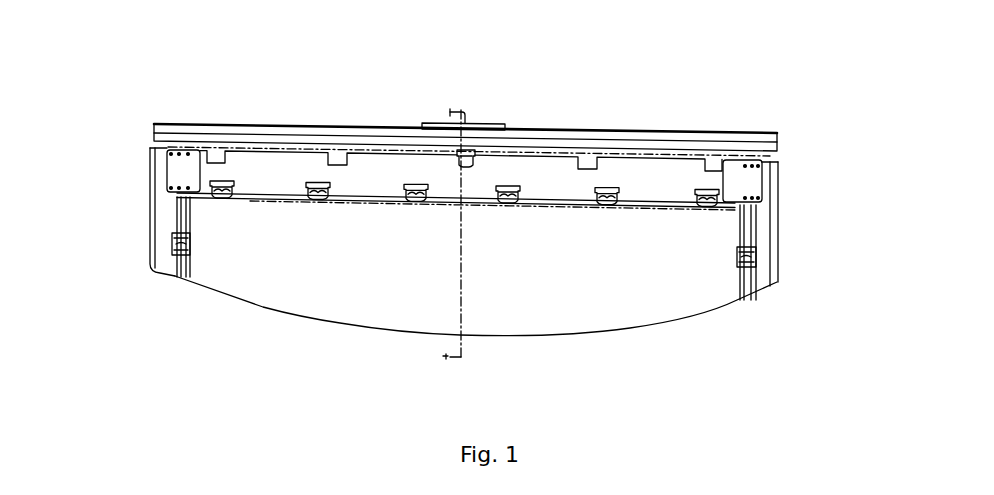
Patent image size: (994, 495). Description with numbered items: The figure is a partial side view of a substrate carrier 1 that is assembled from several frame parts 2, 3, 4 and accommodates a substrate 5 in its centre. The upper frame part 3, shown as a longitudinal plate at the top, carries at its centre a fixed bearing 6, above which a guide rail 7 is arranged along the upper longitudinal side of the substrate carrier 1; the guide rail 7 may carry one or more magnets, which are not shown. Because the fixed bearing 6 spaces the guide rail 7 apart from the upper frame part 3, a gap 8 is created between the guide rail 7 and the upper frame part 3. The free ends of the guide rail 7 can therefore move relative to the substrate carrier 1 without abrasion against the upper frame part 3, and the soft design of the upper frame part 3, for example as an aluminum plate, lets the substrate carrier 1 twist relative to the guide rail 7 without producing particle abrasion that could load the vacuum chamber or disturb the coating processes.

The substrate carrier 1 is at (770, 227).
The frame part 2 is at (780, 195).
The upper frame part 3 is at (262, 178).
The frame part 4 is at (157, 218).
The substrate 5 is at (313, 283).
The fixed bearing 6 is at (470, 152).
The guide rail 7 is at (652, 136).
The gap 8 is at (745, 162).